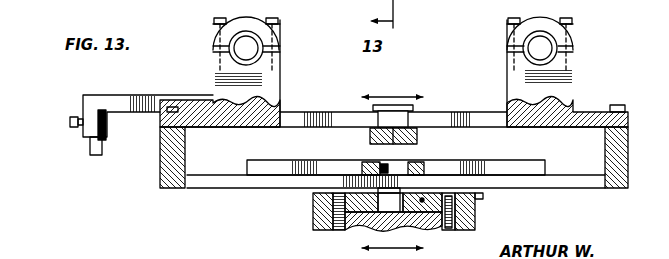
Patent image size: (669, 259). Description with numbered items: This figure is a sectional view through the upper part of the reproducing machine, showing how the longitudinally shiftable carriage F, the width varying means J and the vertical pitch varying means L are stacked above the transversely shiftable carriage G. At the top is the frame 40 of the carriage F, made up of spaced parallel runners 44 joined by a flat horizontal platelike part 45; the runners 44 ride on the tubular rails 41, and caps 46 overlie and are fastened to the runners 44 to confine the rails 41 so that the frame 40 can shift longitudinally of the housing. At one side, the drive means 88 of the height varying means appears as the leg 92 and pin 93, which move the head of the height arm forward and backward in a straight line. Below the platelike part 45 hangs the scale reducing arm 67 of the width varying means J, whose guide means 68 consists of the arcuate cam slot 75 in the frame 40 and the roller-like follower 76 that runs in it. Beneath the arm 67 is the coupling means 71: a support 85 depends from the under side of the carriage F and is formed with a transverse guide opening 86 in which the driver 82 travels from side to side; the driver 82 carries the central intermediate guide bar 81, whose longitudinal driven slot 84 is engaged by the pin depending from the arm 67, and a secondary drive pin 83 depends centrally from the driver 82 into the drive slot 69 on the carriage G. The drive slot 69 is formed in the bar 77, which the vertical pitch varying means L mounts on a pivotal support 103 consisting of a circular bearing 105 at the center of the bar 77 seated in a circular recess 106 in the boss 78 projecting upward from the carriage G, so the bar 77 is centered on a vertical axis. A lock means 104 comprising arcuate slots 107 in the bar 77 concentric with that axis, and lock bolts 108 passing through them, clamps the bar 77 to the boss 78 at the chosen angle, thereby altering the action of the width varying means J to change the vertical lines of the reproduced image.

The frame 40 is at (320, 112).
The rails 41 is at (263, 58).
The runners 44 is at (213, 72).
The platelike part 45 is at (440, 112).
The caps 46 is at (248, 19).
The scale reducing arm 67 is at (370, 137).
The guide means 68 is at (470, 112).
The drive slot 69 is at (401, 192).
The coupling means 71 is at (432, 168).
The cam slot 75 is at (290, 112).
The follower 76 is at (392, 118).
The bar 77 is at (313, 200).
The boss 78 is at (476, 218).
The intermediate guide bar 81 is at (424, 164).
The driver 82 is at (547, 168).
The secondary drive pin 83 is at (422, 200).
The driven slot 84 is at (380, 163).
The support 85 is at (187, 188).
The guide opening 86 is at (228, 188).
The drive means 88 is at (83, 105).
The leg 92 is at (131, 100).
The pin 93 is at (103, 150).
The pivotal support 103 is at (352, 216).
The lock means 104 is at (333, 229).
The bearing 105 is at (372, 228).
The recess 106 is at (408, 226).
The arcuate slots 107 is at (318, 216).
The lock bolts 108 is at (472, 228).
The longitudinally shiftable carriage F is at (575, 76).
The transversely shiftable carriage G is at (312, 224).
The width varying means J is at (423, 137).
The vertical pitch varying means L is at (315, 190).